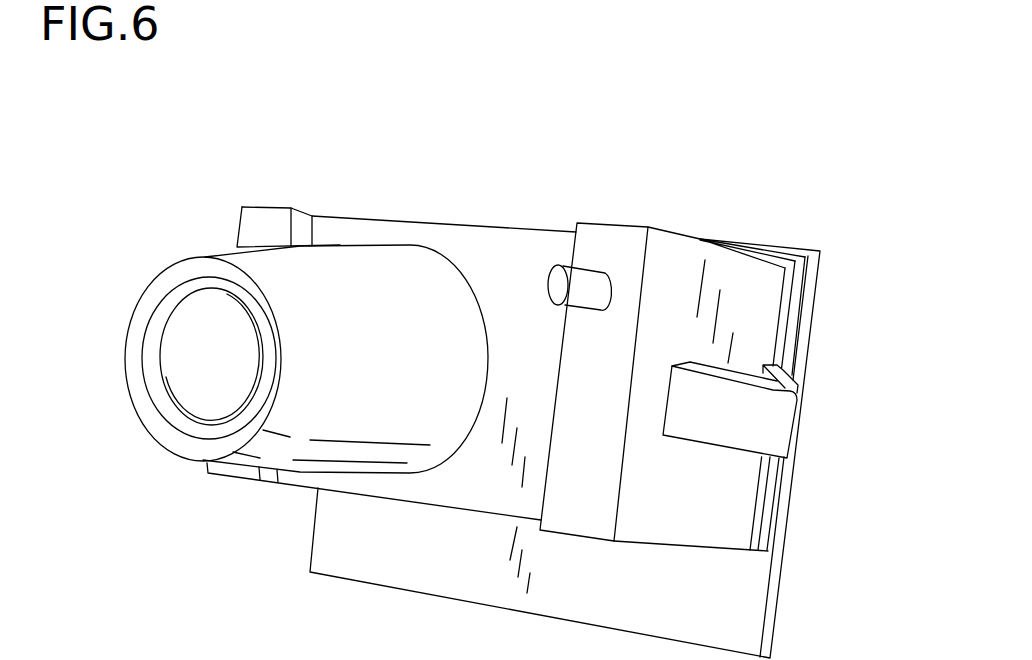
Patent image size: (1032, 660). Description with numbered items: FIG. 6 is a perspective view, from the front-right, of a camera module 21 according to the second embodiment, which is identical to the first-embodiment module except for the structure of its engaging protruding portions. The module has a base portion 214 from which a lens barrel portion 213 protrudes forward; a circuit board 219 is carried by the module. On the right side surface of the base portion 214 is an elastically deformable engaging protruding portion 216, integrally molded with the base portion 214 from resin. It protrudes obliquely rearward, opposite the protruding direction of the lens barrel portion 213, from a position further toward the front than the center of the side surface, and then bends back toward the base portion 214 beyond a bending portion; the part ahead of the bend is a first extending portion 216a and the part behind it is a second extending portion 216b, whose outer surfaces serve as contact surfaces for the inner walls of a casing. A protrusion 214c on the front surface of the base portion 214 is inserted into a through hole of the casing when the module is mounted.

The camera module 21 is at (231, 182).
The lens barrel portion 213 is at (357, 288).
The base portion 214 is at (507, 226).
The protrusion 214c is at (585, 282).
The engaging protruding portion 216 is at (781, 425).
The first extending portion 216a is at (717, 420).
The second extending portion 216b is at (782, 372).
The circuit board 219 is at (781, 584).